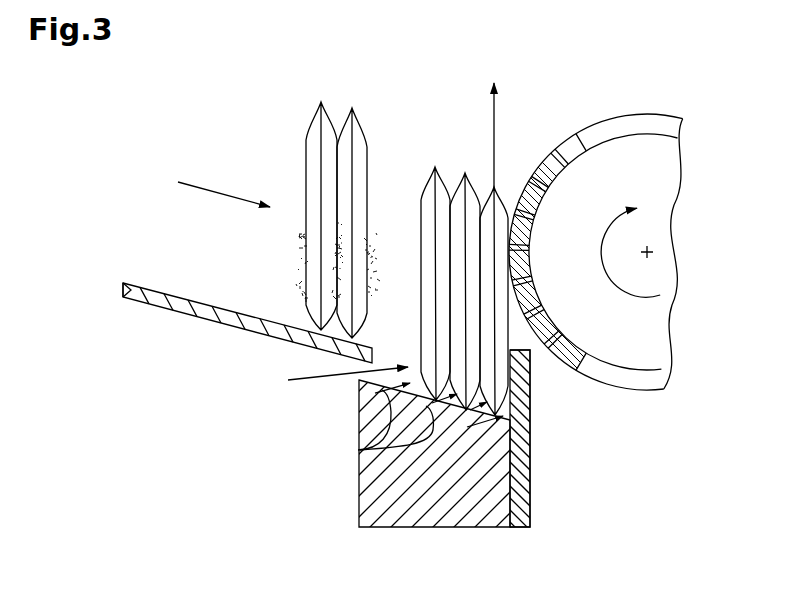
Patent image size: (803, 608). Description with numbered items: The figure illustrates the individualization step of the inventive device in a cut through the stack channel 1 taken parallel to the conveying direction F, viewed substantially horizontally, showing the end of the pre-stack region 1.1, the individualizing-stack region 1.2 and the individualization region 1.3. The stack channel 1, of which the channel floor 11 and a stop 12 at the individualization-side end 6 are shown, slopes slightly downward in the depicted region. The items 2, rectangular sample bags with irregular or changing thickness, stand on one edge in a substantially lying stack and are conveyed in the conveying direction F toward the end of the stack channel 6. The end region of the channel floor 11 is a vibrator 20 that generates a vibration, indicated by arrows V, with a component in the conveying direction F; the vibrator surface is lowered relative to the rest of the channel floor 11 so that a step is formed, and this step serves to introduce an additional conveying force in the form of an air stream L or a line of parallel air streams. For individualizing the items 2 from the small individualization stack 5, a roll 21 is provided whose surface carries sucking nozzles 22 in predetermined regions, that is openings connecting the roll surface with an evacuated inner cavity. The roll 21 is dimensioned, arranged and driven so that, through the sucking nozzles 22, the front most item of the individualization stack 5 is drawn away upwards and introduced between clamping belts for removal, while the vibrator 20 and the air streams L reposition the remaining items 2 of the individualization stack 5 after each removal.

The stack channel 1 is at (230, 313).
The channel floor 11 is at (172, 302).
The pre-stack region 1.1 is at (149, 190).
The individualizing-stack region 1.2 is at (427, 138).
The individualization region 1.3 is at (522, 133).
The items 2 is at (328, 213).
The individualization stack 5 is at (450, 137).
The individualization-side end of the stack channel 6 is at (540, 463).
The stop 12 is at (520, 400).
The vibrator 20 is at (456, 490).
The roll 21 is at (598, 286).
The sucking nozzles 22 is at (531, 213).
The conveying direction F is at (212, 190).
The air stream L is at (322, 380).
The vibration V is at (360, 450).